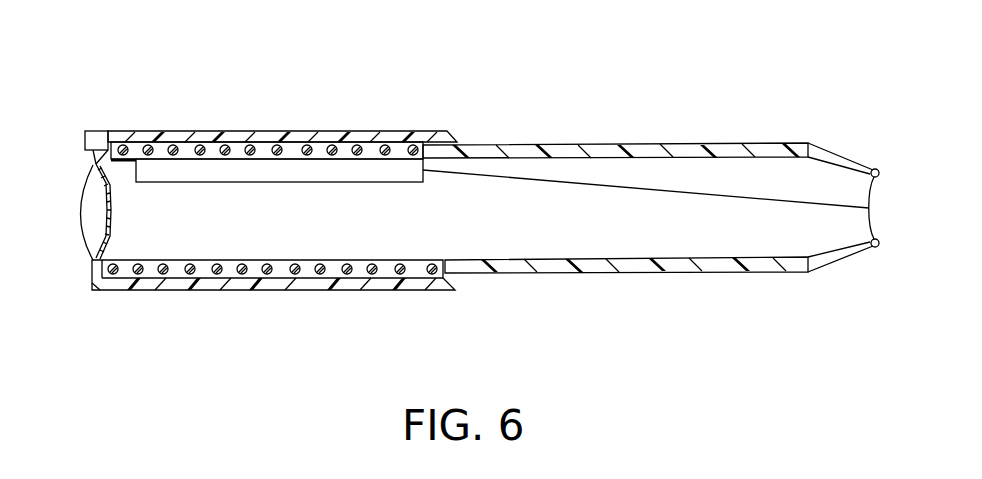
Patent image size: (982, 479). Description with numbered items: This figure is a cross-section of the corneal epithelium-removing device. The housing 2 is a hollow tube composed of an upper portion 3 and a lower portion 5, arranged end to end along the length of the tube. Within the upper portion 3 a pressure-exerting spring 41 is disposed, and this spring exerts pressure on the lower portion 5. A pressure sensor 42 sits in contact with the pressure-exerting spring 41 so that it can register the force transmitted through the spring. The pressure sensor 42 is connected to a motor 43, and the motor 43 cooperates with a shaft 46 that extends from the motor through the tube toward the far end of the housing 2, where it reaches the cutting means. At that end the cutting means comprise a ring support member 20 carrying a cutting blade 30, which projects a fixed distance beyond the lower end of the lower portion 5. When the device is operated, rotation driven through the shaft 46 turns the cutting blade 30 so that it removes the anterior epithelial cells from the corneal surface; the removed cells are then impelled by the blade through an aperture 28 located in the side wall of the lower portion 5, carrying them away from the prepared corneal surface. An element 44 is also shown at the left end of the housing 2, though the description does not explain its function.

The housing 2 is at (669, 207).
The upper portion 3 is at (388, 130).
The lower portion 5 is at (553, 146).
The ring support member 20 is at (880, 250).
The aperture 28 is at (822, 270).
The cutting blade 30 is at (878, 197).
The pressure-exerting spring 41 is at (137, 150).
The pressure sensor 42 is at (88, 141).
The motor 43 is at (285, 170).
The diaphragm 44 is at (80, 218).
The shaft 46 is at (647, 186).